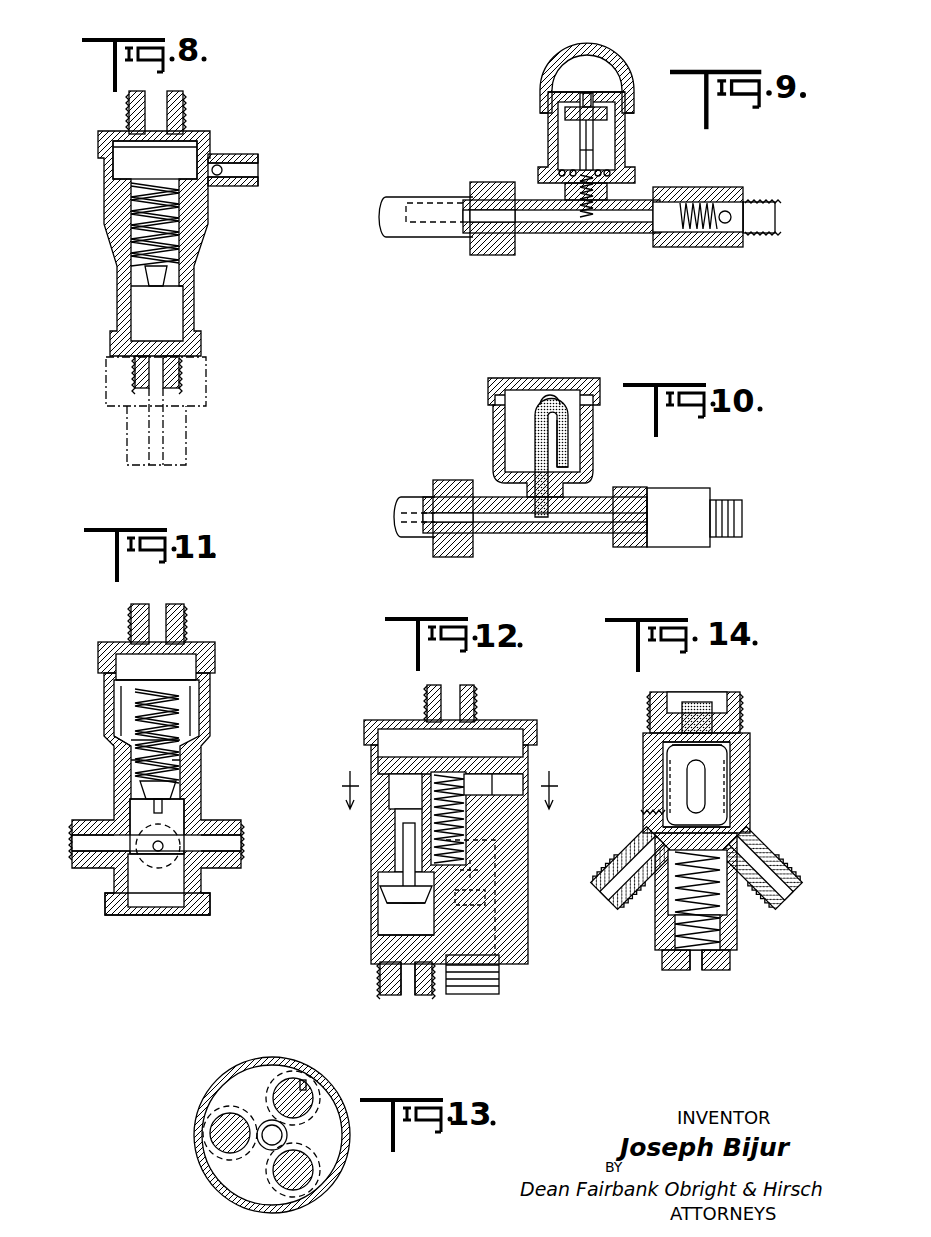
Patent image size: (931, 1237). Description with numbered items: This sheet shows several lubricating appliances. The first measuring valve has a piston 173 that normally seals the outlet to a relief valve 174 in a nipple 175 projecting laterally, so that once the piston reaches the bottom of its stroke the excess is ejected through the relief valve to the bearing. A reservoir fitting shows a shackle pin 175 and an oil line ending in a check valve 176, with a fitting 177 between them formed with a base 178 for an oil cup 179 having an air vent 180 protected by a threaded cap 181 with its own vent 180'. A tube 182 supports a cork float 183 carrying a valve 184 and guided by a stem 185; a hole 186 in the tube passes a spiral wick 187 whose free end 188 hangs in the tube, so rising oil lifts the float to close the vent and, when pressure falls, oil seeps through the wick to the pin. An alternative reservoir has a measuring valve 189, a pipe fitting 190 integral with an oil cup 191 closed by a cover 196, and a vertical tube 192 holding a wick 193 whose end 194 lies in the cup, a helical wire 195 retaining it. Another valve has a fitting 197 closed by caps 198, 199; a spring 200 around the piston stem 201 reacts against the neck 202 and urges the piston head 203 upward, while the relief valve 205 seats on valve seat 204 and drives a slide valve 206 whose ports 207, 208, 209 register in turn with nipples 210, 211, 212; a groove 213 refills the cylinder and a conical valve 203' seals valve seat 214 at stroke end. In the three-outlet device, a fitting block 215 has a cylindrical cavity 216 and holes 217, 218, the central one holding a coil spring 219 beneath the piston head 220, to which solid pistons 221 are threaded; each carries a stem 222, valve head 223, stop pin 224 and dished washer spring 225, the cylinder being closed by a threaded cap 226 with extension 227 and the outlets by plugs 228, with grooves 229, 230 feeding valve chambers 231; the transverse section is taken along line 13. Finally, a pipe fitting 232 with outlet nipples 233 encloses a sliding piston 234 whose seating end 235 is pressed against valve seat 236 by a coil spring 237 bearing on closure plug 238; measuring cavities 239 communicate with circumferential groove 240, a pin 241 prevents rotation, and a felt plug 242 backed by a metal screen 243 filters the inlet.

In FIG. 8, the piston 173 is at (127, 165).
In FIG. 8, the relief valve 174 is at (219, 177).
In FIG. 8, the nipple / shackle pin 175 is at (238, 186).
In FIG. 9, the nipple / shackle pin 175 is at (406, 237).
In FIG. 9, the check valve 176 is at (723, 237).
In FIG. 9, the fitting 177 is at (536, 233).
In FIG. 9, the base 178 is at (538, 181).
In FIG. 9, the oil cup 179 is at (626, 135).
In FIG. 9, the air vent 180 is at (612, 61).
In FIG. 9, the vent 180' is at (560, 92).
In FIG. 9, the threaded cap 181 is at (593, 45).
In FIG. 9, the tube 182 is at (596, 150).
In FIG. 9, the cork float 183 is at (607, 113).
In FIG. 9, the valve 184 is at (594, 99).
In FIG. 9, the stem 185 is at (580, 128).
In FIG. 9, the hole 186 is at (583, 153).
In FIG. 9, the spiral wick 187 is at (610, 173).
In FIG. 9, the free end 188 is at (584, 222).
In FIG. 10, the measuring valve 189 is at (680, 540).
In FIG. 10, the pipe fitting 190 is at (510, 530).
In FIG. 10, the oil cup 191 is at (590, 436).
In FIG. 10, the vertical tube 192 is at (540, 440).
In FIG. 10, the wick 193 is at (562, 405).
In FIG. 10, the wick end 194 is at (578, 461).
In FIG. 10, the helical wire 195 is at (545, 397).
In FIG. 10, the cover 196 is at (500, 380).
In FIG. 11, the fitting 197 is at (193, 751).
In FIG. 11, the cap 198 is at (104, 642).
In FIG. 11, the cap 199 is at (172, 915).
In FIG. 11, the spring 200 is at (128, 691).
In FIG. 11, the piston stem 201 is at (110, 729).
In FIG. 11, the neck 202 is at (125, 786).
In FIG. 11, the piston head 203 is at (177, 644).
In FIG. 11, the conical valve 203' is at (191, 683).
In FIG. 11, the valve seat 204 is at (168, 779).
In FIG. 11, the relief valve 205 is at (134, 761).
In FIG. 11, the slide valve 206 is at (236, 828).
In FIG. 11, the port 207 is at (118, 852).
In FIG. 11, the port 208 is at (183, 803).
In FIG. 11, the port 209 is at (145, 812).
In FIG. 11, the nipple 210 is at (76, 843).
In FIG. 11, the nipple 211 is at (226, 843).
In FIG. 11, the nipple 212 is at (158, 852).
In FIG. 11, the groove 213 is at (114, 710).
In FIG. 11, the valve seat 214 is at (174, 719).
In FIG. 12, the fitting block 215 is at (512, 905).
In FIG. 12, the cylindrical cavity 216 is at (392, 743).
In FIG. 13, the longitudinal holes 217 is at (316, 1094).
In FIG. 13, the central hole 218 is at (266, 1142).
In FIG. 12, the coil spring 219 is at (464, 812).
In FIG. 13, the coil spring 219 is at (240, 1158).
In FIG. 12, the piston head 220 is at (490, 757).
In FIG. 12, the solid pistons 221 is at (396, 792).
In FIG. 13, the solid pistons 221 is at (224, 1121).
In FIG. 12, the stem 222 is at (403, 850).
In FIG. 12, the valve head 223 is at (392, 936).
In FIG. 12, the stop pin 224 is at (405, 889).
In FIG. 12, the dished washer spring 225 is at (416, 904).
In FIG. 12, the threaded cap 226 is at (397, 720).
In FIG. 12, the extension 227 is at (471, 701).
In FIG. 12, the outlet plugs 228 is at (416, 996).
In FIG. 12, the groove 229 is at (380, 774).
In FIG. 12, the longitudinal groove 230 is at (392, 812).
In FIG. 13, the longitudinal groove 230 is at (304, 1080).
In FIG. 12, the valve chamber 231 is at (390, 902).
In FIG. 14, the pipe fitting 232 is at (742, 782).
In FIG. 14, the outlet nipples 233 is at (624, 900).
In FIG. 14, the sliding piston 234 is at (657, 835).
In FIG. 14, the seating end 235 is at (665, 745).
In FIG. 14, the valve seat 236 is at (680, 735).
In FIG. 14, the coil spring 237 is at (731, 906).
In FIG. 14, the closure plug 238 is at (716, 971).
In FIG. 14, the measuring cavities 239 is at (694, 784).
In FIG. 14, the circumferential groove 240 is at (662, 756).
In FIG. 14, the pin 241 is at (641, 811).
In FIG. 14, the felt plug 242 is at (704, 704).
In FIG. 14, the metal screen 243 is at (714, 746).
In FIG. 12, the section line 13 is at (449, 787).